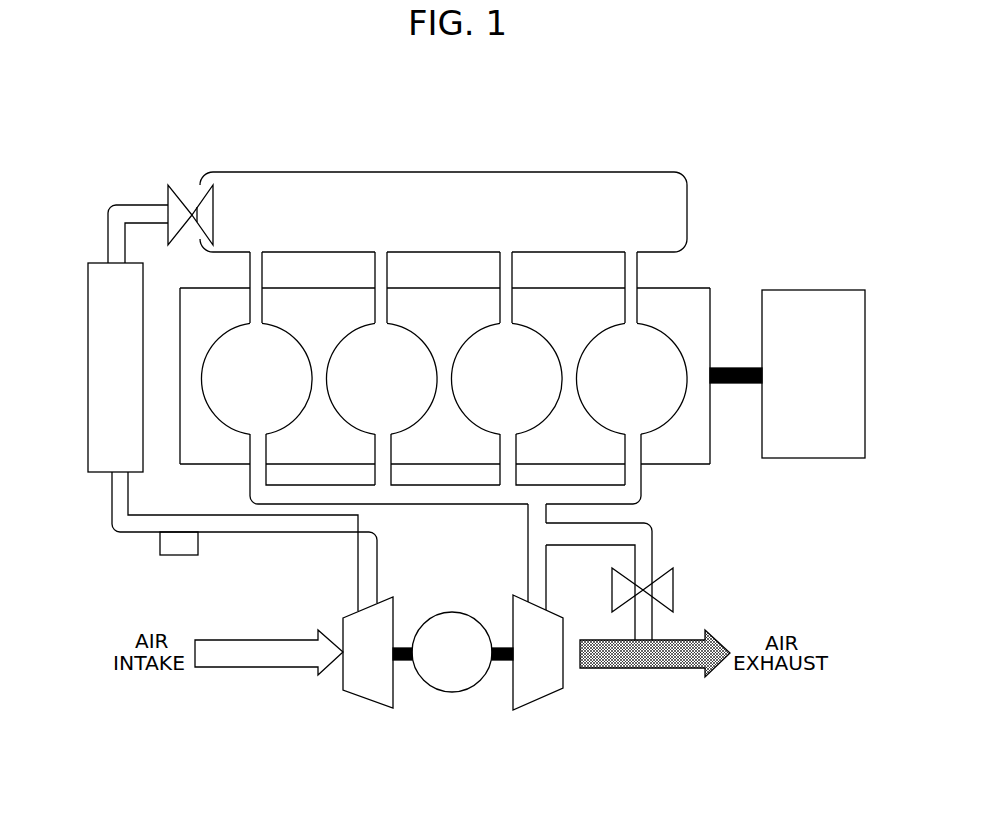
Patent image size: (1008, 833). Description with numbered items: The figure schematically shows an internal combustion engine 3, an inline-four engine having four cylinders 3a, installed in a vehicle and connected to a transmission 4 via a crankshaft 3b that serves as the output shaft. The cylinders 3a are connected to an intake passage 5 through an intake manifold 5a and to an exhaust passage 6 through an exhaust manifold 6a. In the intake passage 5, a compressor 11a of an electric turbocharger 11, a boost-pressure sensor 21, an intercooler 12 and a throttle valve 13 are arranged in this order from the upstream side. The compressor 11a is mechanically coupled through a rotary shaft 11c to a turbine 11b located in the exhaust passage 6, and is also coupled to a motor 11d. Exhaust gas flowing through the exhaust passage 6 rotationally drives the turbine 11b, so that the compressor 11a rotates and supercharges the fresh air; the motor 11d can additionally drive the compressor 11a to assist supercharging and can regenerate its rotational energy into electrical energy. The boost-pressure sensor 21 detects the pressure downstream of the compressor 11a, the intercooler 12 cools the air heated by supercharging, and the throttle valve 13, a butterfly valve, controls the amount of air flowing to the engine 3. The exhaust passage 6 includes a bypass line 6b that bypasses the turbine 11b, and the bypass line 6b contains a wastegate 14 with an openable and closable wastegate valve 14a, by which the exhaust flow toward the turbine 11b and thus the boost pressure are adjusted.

The internal combustion engine 3 is at (713, 256).
The cylinder 3a is at (288, 333).
The crankshaft 3b is at (737, 368).
The transmission 4 is at (823, 290).
The intake passage 5 is at (297, 536).
The intake manifold 5a is at (404, 172).
The exhaust passage 6 is at (528, 572).
The exhaust manifold 6a is at (428, 506).
The bypass line 6b is at (653, 560).
The electric turbocharger 11 is at (467, 694).
The compressor 11a is at (367, 704).
The turbine 11b is at (546, 700).
The rotary shaft 11c is at (400, 648).
The motor 11d is at (458, 693).
The intercooler 12 is at (88, 335).
The throttle valve 13 is at (190, 184).
The wastegate 14 is at (710, 582).
The wastegate valve 14a is at (686, 576).
The boost-pressure sensor 21 is at (182, 556).